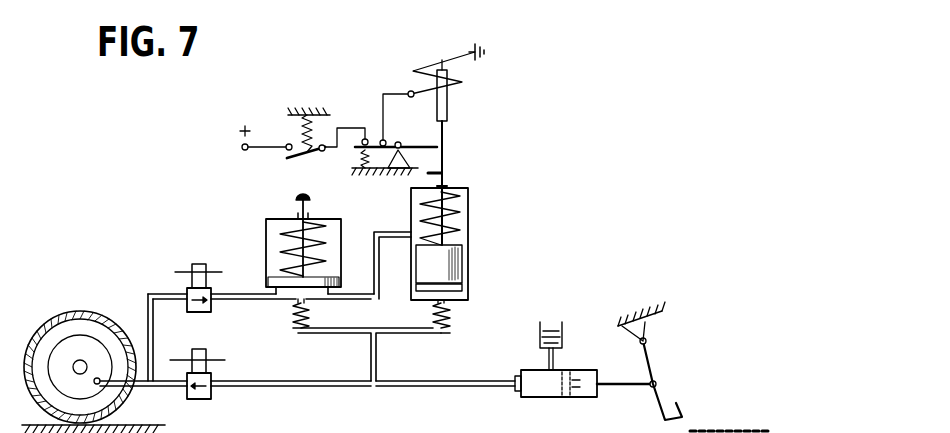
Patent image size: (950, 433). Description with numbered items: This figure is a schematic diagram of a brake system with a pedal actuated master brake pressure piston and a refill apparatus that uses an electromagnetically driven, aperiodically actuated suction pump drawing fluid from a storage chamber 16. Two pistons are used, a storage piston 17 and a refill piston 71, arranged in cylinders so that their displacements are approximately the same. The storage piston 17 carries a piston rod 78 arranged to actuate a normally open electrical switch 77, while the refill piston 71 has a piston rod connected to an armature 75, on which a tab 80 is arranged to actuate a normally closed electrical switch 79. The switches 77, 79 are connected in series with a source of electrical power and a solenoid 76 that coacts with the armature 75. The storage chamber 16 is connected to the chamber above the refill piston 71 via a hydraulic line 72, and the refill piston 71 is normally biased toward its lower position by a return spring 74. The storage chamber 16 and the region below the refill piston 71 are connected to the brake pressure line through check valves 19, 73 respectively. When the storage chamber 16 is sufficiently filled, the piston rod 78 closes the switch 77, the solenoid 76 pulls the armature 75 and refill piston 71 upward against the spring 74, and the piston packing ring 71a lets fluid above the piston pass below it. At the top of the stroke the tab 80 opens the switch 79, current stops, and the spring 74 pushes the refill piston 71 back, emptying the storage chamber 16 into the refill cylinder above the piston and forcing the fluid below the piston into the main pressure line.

The storage chamber 16 is at (288, 293).
The storage piston 17 is at (269, 283).
The check valve 19 is at (293, 320).
The refill piston 71 is at (462, 265).
The piston packing ring 71a is at (468, 288).
The hydraulic line 72 is at (379, 284).
The check valve 73 is at (451, 319).
The return spring 74 is at (468, 200).
The armature 75 is at (447, 110).
The solenoid 76 is at (450, 60).
The normally open electrical switch 77 is at (298, 158).
The piston rod 78 is at (296, 198).
The normally closed electrical switch 79 is at (418, 146).
The tab 80 is at (432, 177).